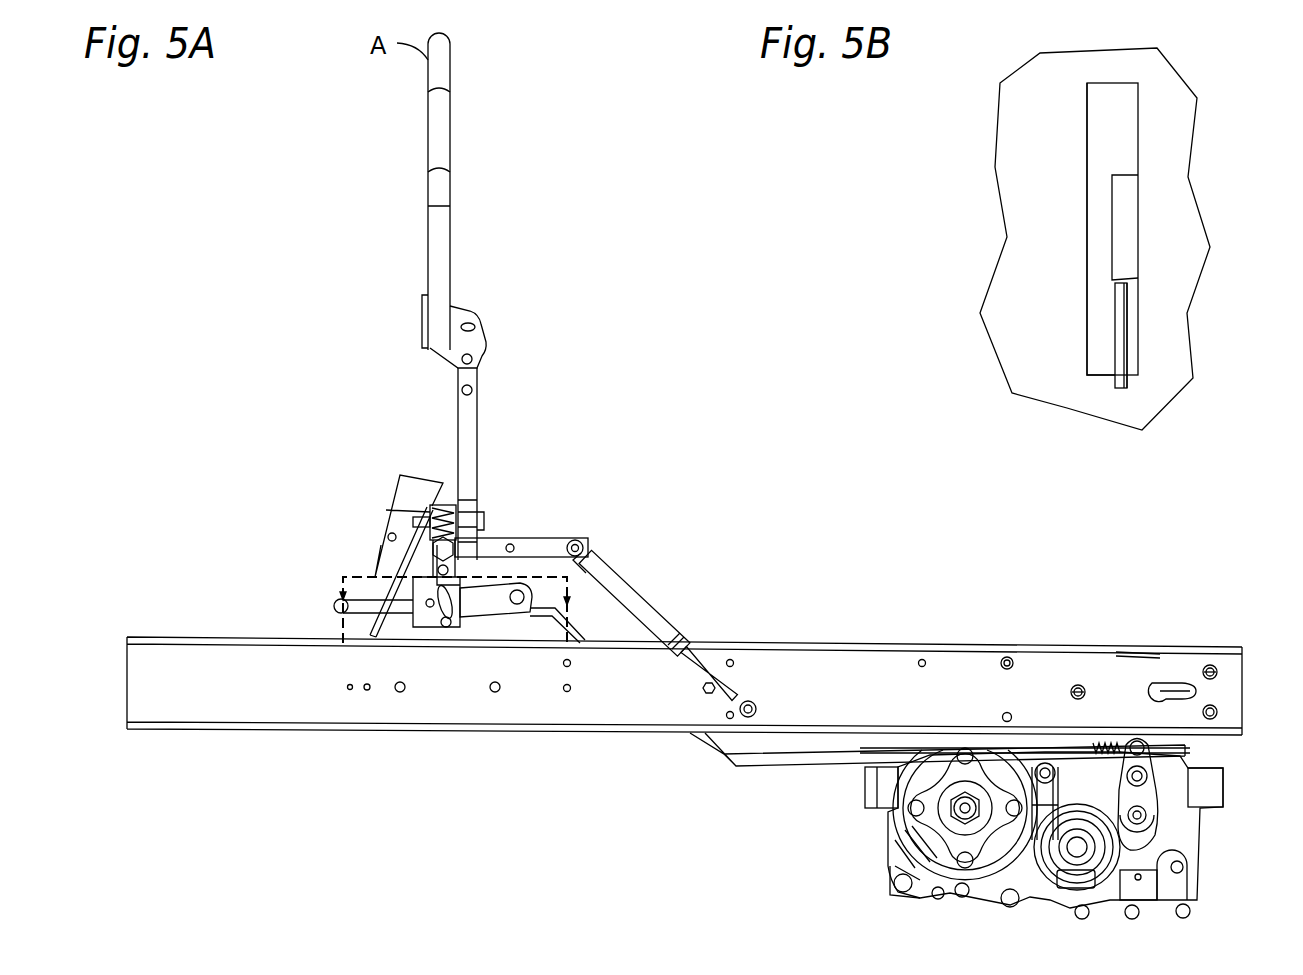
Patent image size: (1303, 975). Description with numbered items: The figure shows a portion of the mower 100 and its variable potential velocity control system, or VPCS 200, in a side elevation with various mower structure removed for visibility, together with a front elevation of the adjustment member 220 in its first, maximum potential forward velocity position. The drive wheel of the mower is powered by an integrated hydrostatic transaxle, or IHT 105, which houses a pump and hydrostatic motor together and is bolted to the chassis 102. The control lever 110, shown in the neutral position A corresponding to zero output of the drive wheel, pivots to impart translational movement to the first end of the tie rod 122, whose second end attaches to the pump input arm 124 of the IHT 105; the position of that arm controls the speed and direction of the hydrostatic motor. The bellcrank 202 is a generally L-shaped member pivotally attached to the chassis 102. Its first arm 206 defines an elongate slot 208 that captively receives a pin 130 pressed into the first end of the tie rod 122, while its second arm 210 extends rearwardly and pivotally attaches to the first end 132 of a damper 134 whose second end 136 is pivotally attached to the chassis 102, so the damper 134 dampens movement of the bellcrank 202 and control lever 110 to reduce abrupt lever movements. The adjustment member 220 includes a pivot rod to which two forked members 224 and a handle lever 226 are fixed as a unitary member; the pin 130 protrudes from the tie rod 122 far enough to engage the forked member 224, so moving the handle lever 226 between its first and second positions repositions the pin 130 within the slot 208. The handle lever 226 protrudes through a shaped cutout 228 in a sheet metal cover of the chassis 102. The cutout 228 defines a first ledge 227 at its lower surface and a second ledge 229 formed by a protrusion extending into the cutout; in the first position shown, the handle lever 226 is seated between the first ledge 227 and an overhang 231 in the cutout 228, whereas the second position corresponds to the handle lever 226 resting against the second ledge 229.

In FIG. 5A, the mower 100 is at (938, 603).
In FIG. 5A, the chassis 102 is at (218, 730).
In FIG. 5B, the chassis 102 is at (1023, 172).
In FIG. 5A, the integrated hydrostatic transaxle 105 is at (897, 890).
In FIG. 5A, the control lever 110 is at (452, 112).
In FIG. 5A, the tie rod 122 is at (722, 752).
In FIG. 5A, the pump input arm 124 is at (1185, 820).
In FIG. 5A, the pin 130 is at (468, 627).
In FIG. 5A, the first end of damper 132 is at (579, 546).
In FIG. 5A, the damper 134 is at (645, 603).
In FIG. 5A, the second end of damper 136 is at (757, 698).
In FIG. 5A, the variable potential velocity control system 200 is at (531, 436).
In FIG. 5A, the bellcrank 202 is at (400, 526).
In FIG. 5A, the first arm 206 is at (420, 627).
In FIG. 5A, the slot 208 is at (440, 627).
In FIG. 5A, the second arm 210 is at (537, 540).
In FIG. 5A, the adjustment member 220 is at (397, 636).
In FIG. 5A, the forked member 224 is at (500, 540).
In FIG. 5A, the handle lever 226 is at (338, 606).
In FIG. 5B, the handle lever 226 is at (1130, 382).
In FIG. 5B, the first ledge 227 is at (1103, 373).
In FIG. 5B, the shaped cutout 228 is at (1087, 113).
In FIG. 5B, the second ledge 229 is at (1130, 180).
In FIG. 5B, the overhang 231 is at (1138, 287).